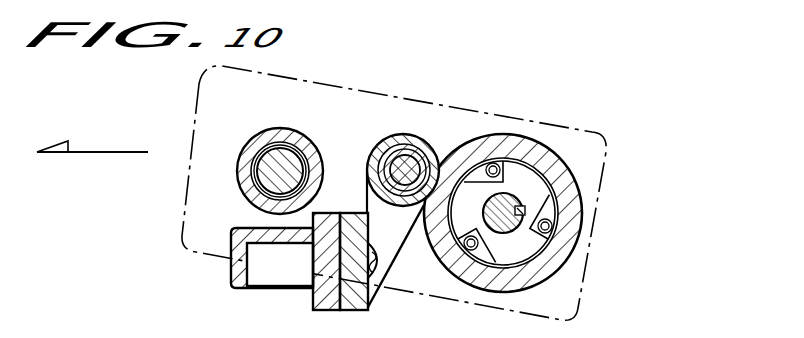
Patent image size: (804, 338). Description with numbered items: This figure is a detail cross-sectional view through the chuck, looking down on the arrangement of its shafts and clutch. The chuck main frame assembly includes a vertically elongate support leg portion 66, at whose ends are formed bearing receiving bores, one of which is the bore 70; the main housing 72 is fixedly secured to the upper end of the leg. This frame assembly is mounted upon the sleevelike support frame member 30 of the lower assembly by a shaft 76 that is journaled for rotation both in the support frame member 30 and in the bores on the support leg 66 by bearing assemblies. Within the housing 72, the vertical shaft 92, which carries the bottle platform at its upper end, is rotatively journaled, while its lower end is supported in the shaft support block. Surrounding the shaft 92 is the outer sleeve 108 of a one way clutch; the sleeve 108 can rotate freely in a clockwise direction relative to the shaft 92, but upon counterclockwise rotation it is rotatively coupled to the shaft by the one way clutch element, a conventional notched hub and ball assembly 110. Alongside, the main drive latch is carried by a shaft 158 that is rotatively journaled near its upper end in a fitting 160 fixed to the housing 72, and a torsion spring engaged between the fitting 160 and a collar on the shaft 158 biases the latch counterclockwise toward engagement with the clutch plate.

The sleevelike support frame member 30 is at (256, 172).
The support leg portion 66 is at (242, 276).
The bearing receiving bore 70 is at (252, 196).
The main housing 72 is at (610, 158).
The shaft 76 is at (262, 158).
The vertical shaft 92 is at (523, 206).
The outer sleeve of one way clutch 108 is at (560, 256).
The notched hub and ball assembly 110 is at (523, 187).
The shaft 158 is at (402, 165).
The fitting 160 is at (403, 170).